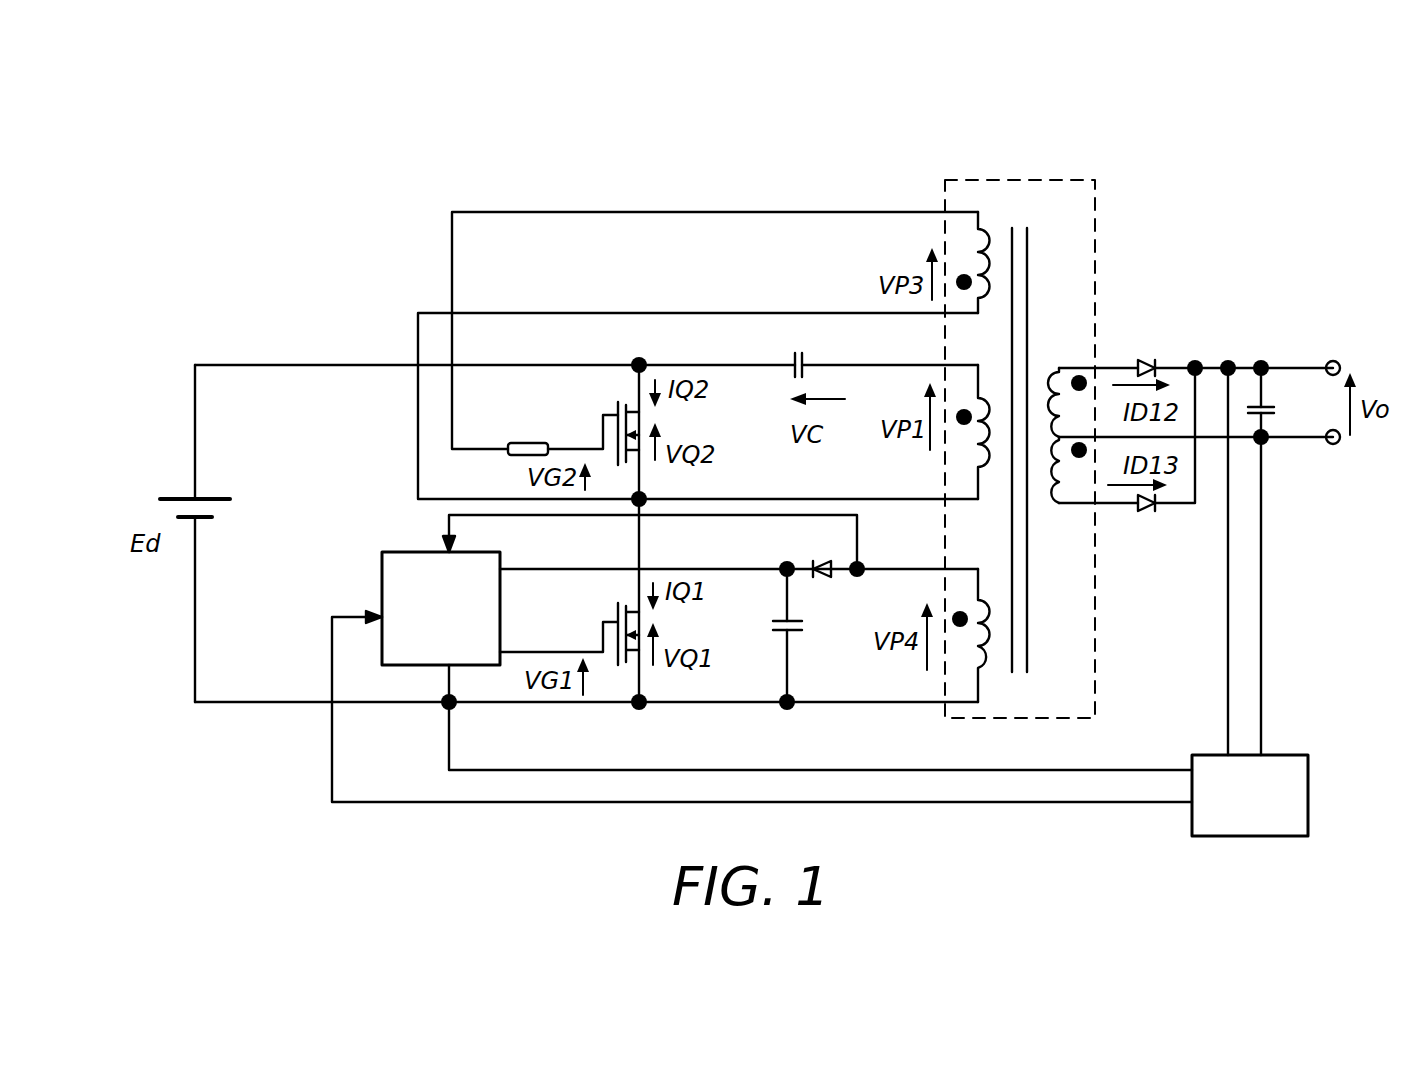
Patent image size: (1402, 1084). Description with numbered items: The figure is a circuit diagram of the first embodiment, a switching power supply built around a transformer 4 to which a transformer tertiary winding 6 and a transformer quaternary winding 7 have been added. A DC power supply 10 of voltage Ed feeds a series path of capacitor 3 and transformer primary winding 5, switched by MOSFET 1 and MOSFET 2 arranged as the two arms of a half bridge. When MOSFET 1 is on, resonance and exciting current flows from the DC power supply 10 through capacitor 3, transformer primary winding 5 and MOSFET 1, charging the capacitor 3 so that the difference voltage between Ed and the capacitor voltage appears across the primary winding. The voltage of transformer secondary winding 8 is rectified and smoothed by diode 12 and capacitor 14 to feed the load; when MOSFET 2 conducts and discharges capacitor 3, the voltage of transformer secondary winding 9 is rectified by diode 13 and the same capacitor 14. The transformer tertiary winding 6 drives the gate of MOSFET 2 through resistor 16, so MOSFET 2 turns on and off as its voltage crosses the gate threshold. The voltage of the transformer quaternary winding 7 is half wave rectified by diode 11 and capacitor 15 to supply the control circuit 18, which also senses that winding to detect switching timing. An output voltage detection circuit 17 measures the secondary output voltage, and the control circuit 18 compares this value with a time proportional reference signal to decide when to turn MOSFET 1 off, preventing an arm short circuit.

The MOSFET 1 is at (598, 632).
The MOSFET 2 is at (608, 412).
The capacitor 3 is at (790, 358).
The transformer 4 is at (1098, 210).
The transformer primary winding 5 is at (978, 455).
The transformer tertiary winding 6 is at (985, 248).
The transformer quaternary winding 7 is at (985, 663).
The transformer secondary winding 8 is at (1058, 365).
The transformer secondary winding 9 is at (1058, 505).
The DC power supply 10 is at (165, 507).
The diode 11 is at (818, 562).
The diode 12 is at (1150, 355).
The diode 13 is at (1142, 508).
The capacitor 14 is at (1268, 403).
The capacitor 15 is at (798, 636).
The resistor 16 is at (523, 443).
The output voltage detection circuit 17 is at (1310, 790).
The control circuit 18 is at (382, 565).